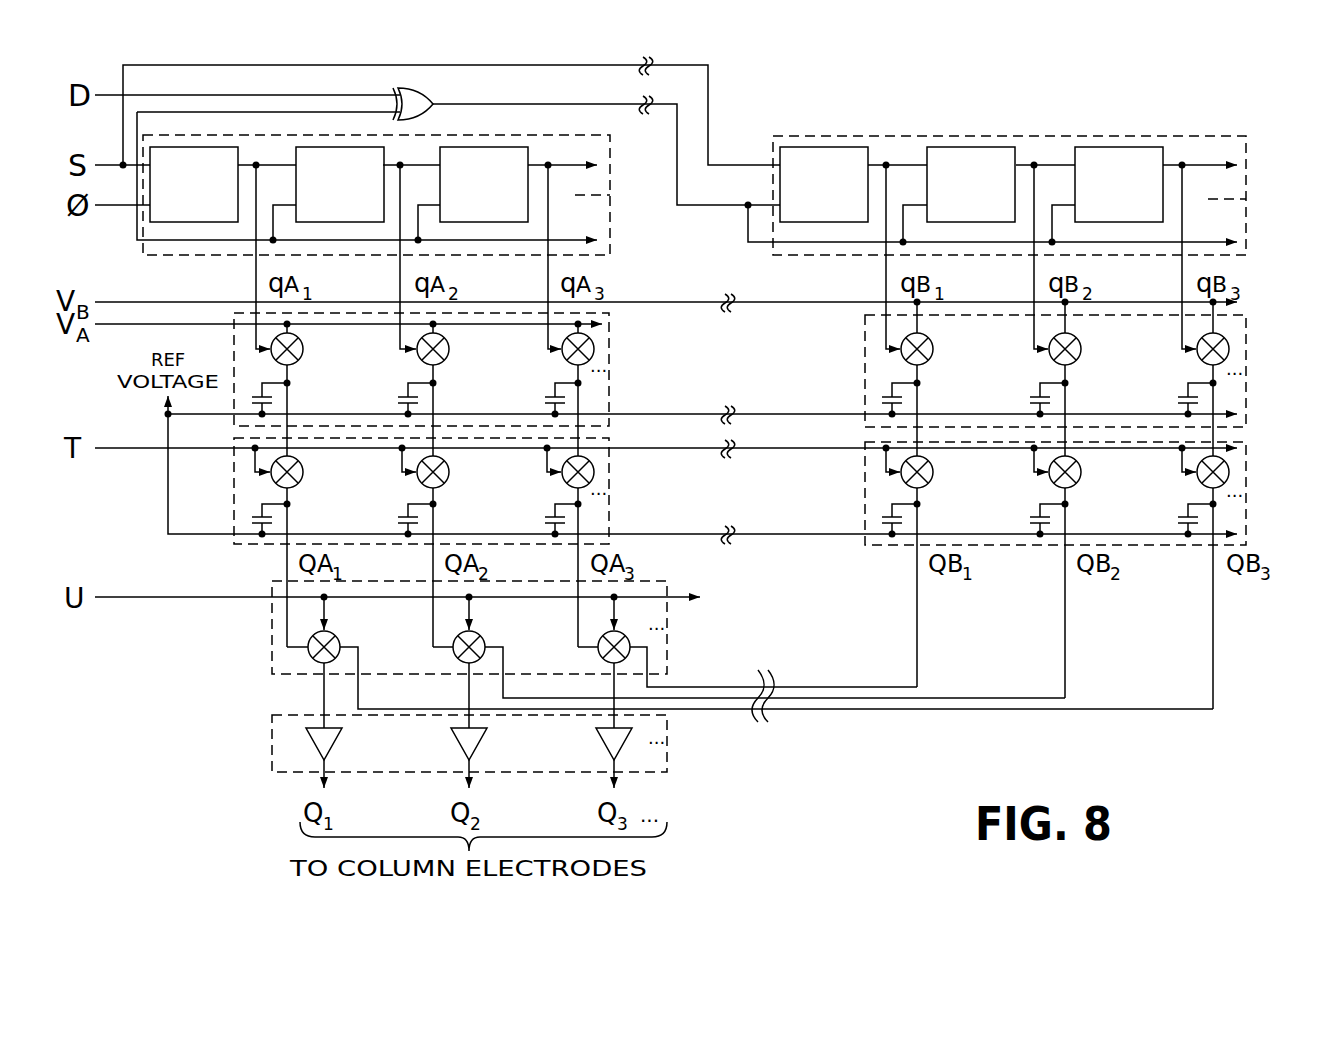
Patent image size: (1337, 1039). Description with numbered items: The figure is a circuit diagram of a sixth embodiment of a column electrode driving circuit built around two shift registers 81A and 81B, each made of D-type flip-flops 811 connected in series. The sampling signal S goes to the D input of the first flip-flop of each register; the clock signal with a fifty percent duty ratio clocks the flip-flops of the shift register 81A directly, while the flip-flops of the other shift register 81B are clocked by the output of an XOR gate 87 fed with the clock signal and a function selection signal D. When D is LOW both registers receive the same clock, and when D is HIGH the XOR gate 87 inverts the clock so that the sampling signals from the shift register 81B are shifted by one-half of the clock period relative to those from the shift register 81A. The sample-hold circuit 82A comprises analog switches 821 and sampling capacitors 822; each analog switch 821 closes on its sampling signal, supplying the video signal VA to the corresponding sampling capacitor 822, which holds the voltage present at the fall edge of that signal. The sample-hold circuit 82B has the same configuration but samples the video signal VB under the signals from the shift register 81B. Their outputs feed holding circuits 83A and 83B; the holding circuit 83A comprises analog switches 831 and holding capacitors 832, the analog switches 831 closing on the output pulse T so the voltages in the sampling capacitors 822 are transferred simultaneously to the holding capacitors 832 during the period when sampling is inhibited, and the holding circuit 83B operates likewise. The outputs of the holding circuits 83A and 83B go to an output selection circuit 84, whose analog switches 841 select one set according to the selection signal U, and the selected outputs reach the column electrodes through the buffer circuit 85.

The D-type flip-flop 811 is at (200, 147).
The XOR gate 87 is at (429, 88).
The shift register 81A is at (416, 138).
The shift register 81B is at (1248, 152).
The analog switch 821 is at (303, 346).
The sampling capacitor 822 is at (289, 397).
The sample-hold circuit 82A is at (462, 384).
The sample-hold circuit 82B is at (1248, 330).
The analog switch 831 is at (303, 469).
The holding capacitor 832 is at (289, 517).
The holding circuit 83A is at (462, 542).
The holding circuit 83B is at (1248, 450).
The analog switch 841 is at (340, 643).
The output selection circuit 84 is at (501, 627).
The buffer circuit 85 is at (669, 758).